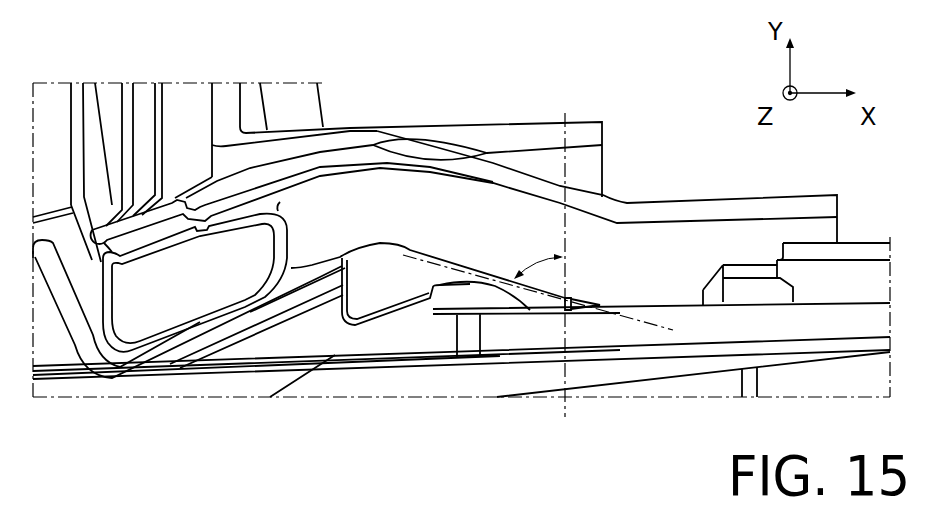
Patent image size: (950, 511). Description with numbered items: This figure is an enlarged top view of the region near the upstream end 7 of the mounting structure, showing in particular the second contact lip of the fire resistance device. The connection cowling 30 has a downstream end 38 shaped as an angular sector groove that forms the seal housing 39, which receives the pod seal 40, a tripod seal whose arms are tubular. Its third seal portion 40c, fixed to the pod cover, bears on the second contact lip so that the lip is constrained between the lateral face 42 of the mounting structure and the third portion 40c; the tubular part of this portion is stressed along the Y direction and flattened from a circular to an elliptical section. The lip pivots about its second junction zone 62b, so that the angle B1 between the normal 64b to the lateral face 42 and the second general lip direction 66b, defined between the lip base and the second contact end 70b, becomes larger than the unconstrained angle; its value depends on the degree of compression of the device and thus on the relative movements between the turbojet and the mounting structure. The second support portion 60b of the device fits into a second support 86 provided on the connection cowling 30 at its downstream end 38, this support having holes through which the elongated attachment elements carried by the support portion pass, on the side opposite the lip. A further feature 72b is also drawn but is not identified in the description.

The upstream end of the mounting structure 7 is at (652, 400).
The connection cowling 30 is at (47, 218).
The downstream end 38 is at (78, 277).
The housing 39 is at (84, 243).
The pod seal 40 is at (187, 203).
The third seal portion 40c is at (497, 178).
The lateral face of the mounting structure 42 is at (657, 303).
The second support portion 60b is at (393, 280).
The second junction zone 62b is at (492, 282).
The normal to the lateral face 64b is at (566, 112).
The second general lip direction 66b is at (483, 275).
The second contact end 70b is at (548, 300).
The end flange 72b is at (567, 295).
The second support 86 is at (348, 305).
The angle of inclination B1 is at (540, 258).